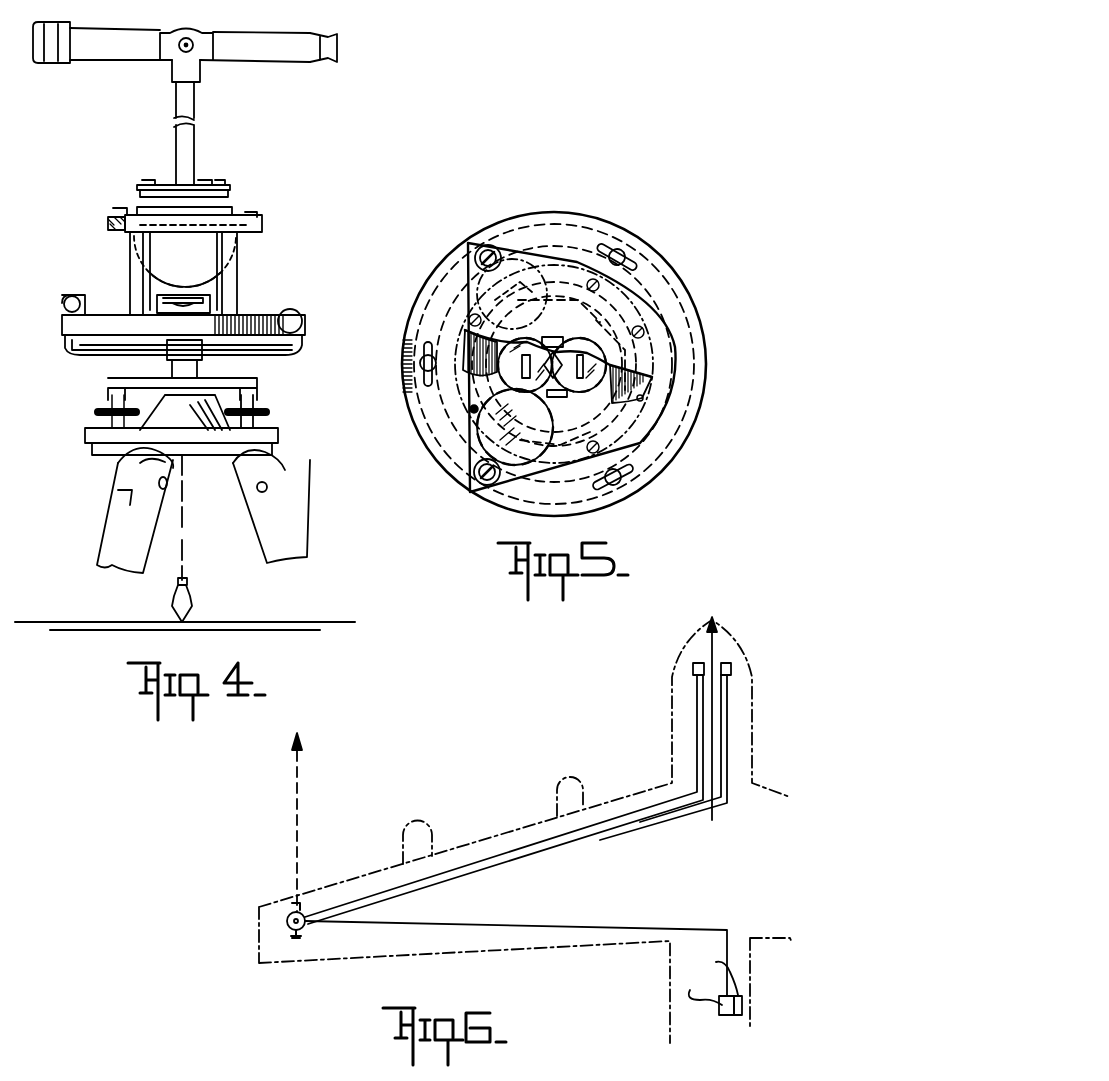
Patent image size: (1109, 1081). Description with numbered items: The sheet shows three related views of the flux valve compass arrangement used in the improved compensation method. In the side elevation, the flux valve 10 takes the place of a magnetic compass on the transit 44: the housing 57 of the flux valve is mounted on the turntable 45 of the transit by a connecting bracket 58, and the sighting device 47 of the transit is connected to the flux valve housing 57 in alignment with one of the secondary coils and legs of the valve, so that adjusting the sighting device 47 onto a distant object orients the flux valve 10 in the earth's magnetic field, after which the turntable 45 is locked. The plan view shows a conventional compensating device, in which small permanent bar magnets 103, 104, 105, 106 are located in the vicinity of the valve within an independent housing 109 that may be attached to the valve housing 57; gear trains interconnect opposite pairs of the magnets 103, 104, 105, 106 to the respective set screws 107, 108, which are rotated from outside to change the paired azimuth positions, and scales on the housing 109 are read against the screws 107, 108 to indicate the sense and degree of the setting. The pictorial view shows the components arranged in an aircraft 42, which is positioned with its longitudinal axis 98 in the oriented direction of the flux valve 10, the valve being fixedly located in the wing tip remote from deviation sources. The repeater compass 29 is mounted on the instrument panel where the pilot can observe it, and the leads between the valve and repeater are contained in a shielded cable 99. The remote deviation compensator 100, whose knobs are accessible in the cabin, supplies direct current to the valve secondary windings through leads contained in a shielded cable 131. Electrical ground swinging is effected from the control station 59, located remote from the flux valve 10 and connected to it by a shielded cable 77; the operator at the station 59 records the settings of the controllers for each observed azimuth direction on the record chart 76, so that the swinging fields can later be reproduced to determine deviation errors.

In FIG. 4, the sighting device 47 is at (243, 58).
In FIG. 6, the sighting device 47 is at (303, 933).
In FIG. 4, the flux valve 10 is at (94, 225).
In FIG. 6, the flux valve 10 is at (274, 917).
In FIG. 4, the housing 57 is at (162, 250).
In FIG. 4, the connecting bracket 58 is at (248, 268).
In FIG. 4, the turntable 45 is at (252, 317).
In FIG. 4, the transit 44 is at (83, 429).
In FIG. 5, the permanent bar magnet 103 is at (566, 268).
In FIG. 5, the permanent bar magnet 104 is at (625, 388).
In FIG. 5, the permanent bar magnet 105 is at (552, 470).
In FIG. 5, the permanent bar magnet 106 is at (480, 370).
In FIG. 5, the set screw 107 is at (478, 249).
In FIG. 5, the set screw 108 is at (482, 488).
In FIG. 5, the housing 109 is at (445, 437).
In FIG. 6, the aircraft 42 is at (477, 947).
In FIG. 6, the longitudinal axis 98 is at (710, 706).
In FIG. 6, the repeater compass 29 is at (682, 674).
In FIG. 6, the deviation compensator 100 is at (735, 654).
In FIG. 6, the shielded cable 99 is at (468, 863).
In FIG. 6, the shielded cable 131 is at (588, 830).
In FIG. 6, the shielded cable 77 is at (525, 928).
In FIG. 6, the control station 59 is at (723, 1017).
In FIG. 6, the record chart 76 is at (738, 1015).